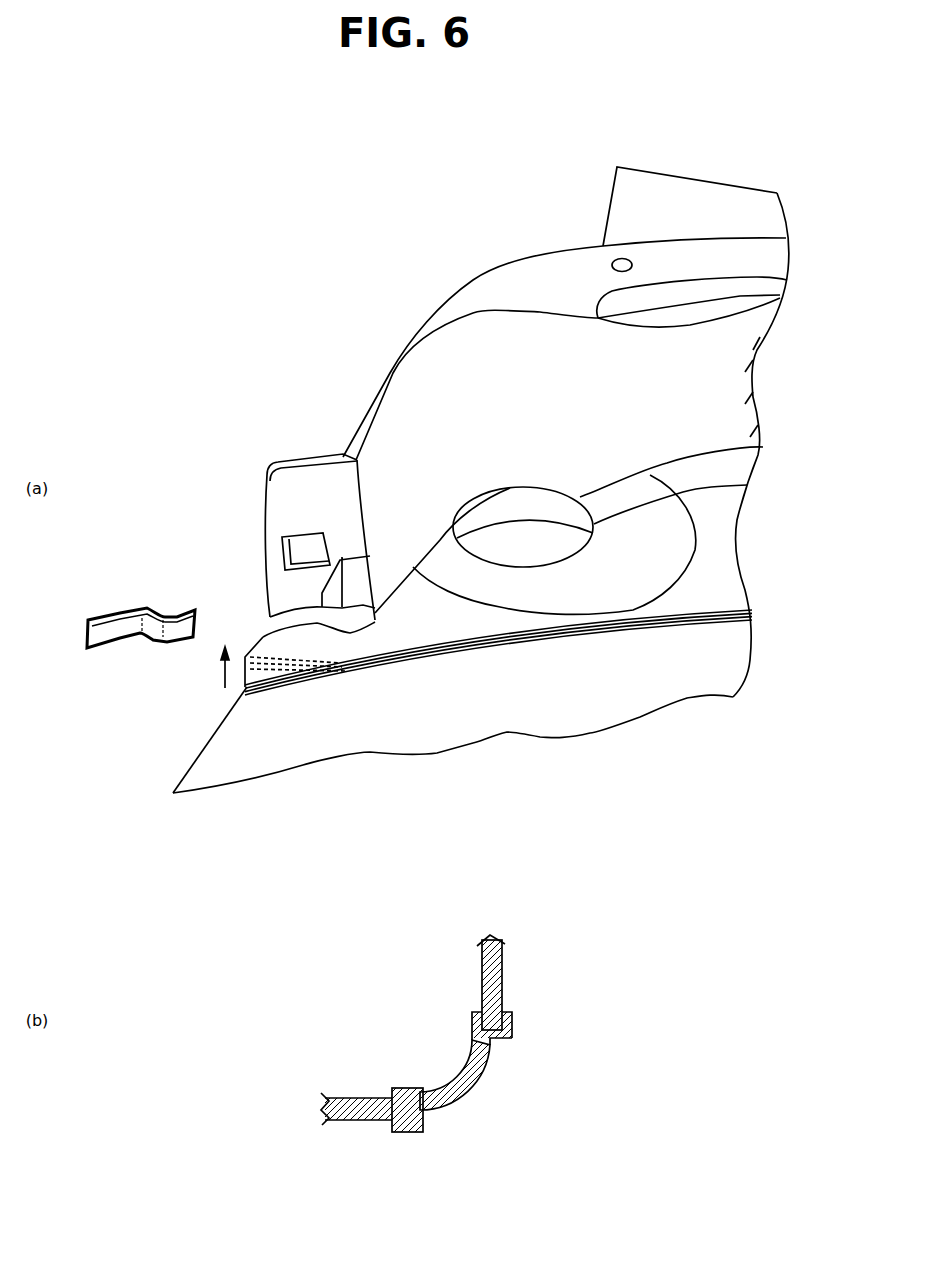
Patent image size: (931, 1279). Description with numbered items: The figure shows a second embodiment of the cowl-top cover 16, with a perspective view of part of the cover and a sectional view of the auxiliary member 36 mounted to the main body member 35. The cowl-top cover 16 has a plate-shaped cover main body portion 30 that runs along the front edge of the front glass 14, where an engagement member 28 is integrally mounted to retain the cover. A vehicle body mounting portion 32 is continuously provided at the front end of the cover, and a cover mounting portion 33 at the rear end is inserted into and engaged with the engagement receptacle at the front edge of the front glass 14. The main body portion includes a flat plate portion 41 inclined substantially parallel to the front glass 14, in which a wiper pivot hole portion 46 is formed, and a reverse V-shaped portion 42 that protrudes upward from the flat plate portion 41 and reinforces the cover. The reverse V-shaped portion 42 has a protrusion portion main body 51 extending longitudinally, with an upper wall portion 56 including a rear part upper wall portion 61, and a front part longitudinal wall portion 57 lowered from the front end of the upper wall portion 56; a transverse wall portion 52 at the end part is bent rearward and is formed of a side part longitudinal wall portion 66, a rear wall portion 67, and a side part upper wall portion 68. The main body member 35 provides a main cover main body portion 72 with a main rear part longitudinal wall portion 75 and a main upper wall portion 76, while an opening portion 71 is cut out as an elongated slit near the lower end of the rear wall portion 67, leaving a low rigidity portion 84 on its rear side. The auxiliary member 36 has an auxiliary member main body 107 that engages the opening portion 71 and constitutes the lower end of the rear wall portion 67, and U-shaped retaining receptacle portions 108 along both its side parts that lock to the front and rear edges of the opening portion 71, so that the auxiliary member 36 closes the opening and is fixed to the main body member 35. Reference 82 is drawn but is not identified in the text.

The front glass 14 is at (737, 650).
The cowl-top cover 16 is at (614, 129).
The engagement member 28 is at (750, 611).
The cover main body portion 30 is at (727, 588).
The vehicle body mounting portion 32 is at (694, 180).
The cover mounting portion 33 is at (248, 691).
The main body member 35 is at (760, 333).
The auxiliary member 36 is at (118, 612).
The flat plate portion 41 is at (727, 556).
The reverse V-shaped portion 42 is at (740, 367).
The wiper pivot hole portion 46 is at (750, 487).
The protrusion portion main body 51 is at (740, 431).
The transverse wall portion 52 is at (393, 588).
The upper wall portion 56 is at (765, 267).
The front part longitudinal wall portion 57 is at (768, 245).
The rear part upper wall portion 61 is at (596, 248).
The side part longitudinal wall portion 66 is at (393, 430).
The rear wall portion 67 is at (273, 538).
The side part upper wall portion 68 is at (388, 387).
The opening portion 71 is at (268, 617).
The main cover main body portion 72 is at (740, 467).
The main rear part longitudinal wall portion 75 is at (740, 400).
The main upper wall portion 76 is at (778, 256).
The edge 82 is at (778, 251).
The low rigidity portion 84 is at (318, 652).
The auxiliary member main body 107 is at (118, 634).
The retaining receptacle portion 108 is at (190, 608).